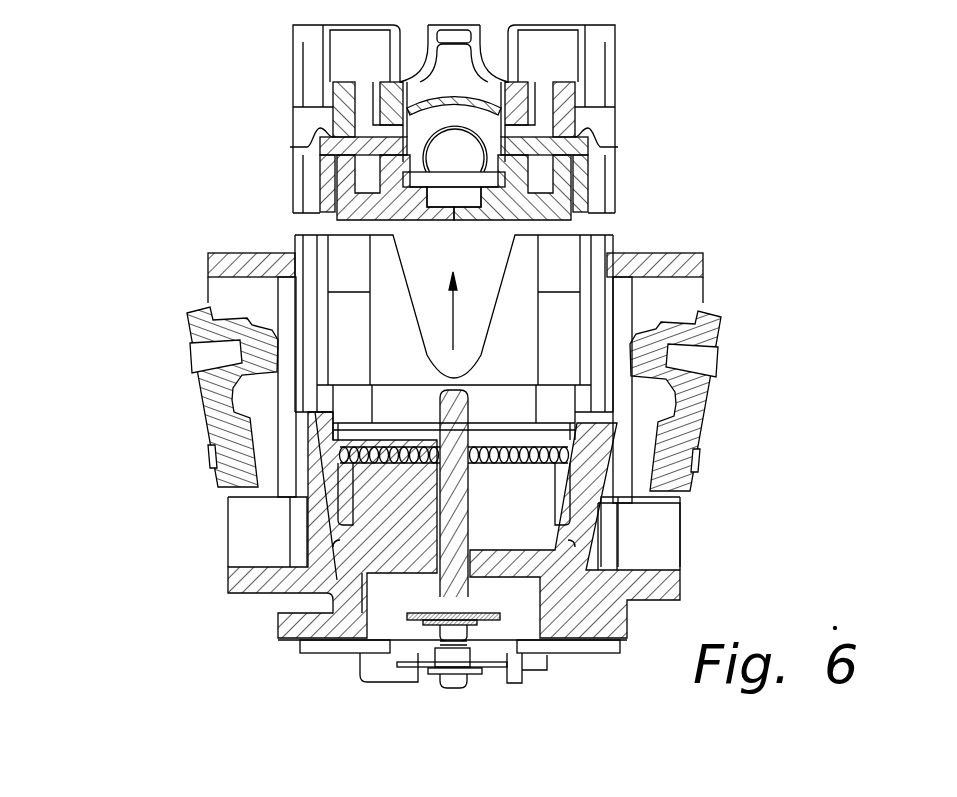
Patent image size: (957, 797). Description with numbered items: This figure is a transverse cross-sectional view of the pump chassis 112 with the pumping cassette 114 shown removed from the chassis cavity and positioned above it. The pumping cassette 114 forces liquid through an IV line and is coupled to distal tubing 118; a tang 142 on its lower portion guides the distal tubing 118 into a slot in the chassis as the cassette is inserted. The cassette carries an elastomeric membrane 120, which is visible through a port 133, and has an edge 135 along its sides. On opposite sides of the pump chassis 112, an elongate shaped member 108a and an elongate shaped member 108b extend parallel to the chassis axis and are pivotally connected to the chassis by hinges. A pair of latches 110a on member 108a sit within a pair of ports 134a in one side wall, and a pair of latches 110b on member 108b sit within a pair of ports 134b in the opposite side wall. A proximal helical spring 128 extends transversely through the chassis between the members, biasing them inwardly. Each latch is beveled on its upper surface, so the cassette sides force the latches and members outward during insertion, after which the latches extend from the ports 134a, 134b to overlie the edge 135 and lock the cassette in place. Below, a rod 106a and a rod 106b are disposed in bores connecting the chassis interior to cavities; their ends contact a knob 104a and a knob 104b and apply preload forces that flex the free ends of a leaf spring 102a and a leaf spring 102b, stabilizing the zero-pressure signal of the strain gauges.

The tang 142 is at (477, 32).
The pumping cassette 114 is at (513, 127).
The elastomeric membrane 120 is at (480, 178).
The distal tubing 118 is at (440, 160).
The edge 135 is at (300, 146).
The port 133 is at (452, 213).
The ports 134a is at (282, 297).
The ports 134b is at (628, 302).
The latches 110a is at (280, 330).
The latches 110b is at (625, 337).
The rod 106b is at (447, 427).
The proximal helical spring 128 is at (233, 417).
The elongate shaped member 108a is at (203, 420).
The elongate shaped member 108b is at (710, 403).
The leaf spring 102b is at (413, 615).
The pump chassis 112 is at (434, 466).
The leaf spring 102a is at (400, 663).
The knob 104a is at (460, 687).
The knob 104b is at (470, 637).
The rod 106a is at (467, 642).